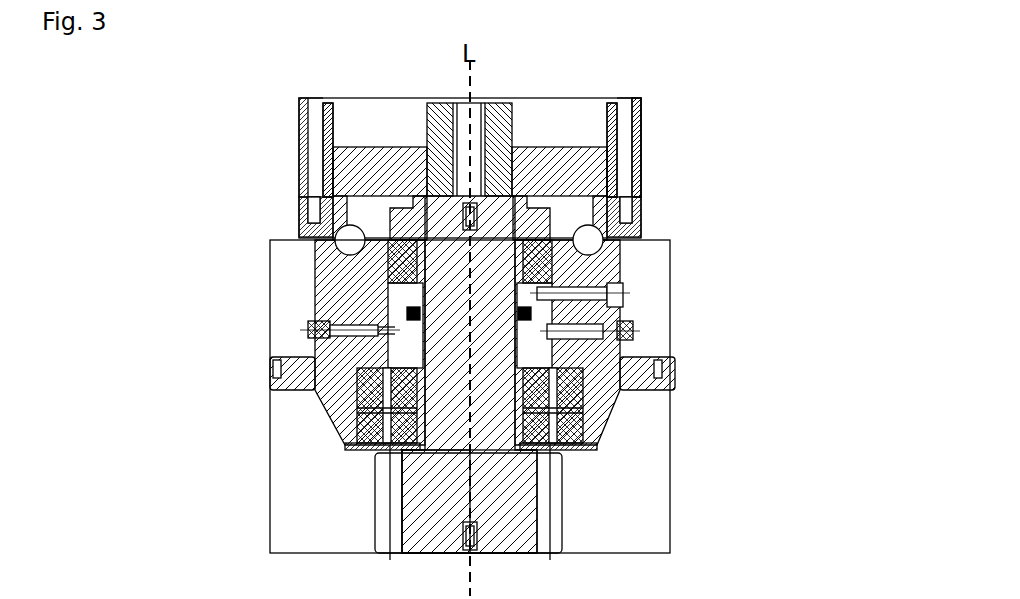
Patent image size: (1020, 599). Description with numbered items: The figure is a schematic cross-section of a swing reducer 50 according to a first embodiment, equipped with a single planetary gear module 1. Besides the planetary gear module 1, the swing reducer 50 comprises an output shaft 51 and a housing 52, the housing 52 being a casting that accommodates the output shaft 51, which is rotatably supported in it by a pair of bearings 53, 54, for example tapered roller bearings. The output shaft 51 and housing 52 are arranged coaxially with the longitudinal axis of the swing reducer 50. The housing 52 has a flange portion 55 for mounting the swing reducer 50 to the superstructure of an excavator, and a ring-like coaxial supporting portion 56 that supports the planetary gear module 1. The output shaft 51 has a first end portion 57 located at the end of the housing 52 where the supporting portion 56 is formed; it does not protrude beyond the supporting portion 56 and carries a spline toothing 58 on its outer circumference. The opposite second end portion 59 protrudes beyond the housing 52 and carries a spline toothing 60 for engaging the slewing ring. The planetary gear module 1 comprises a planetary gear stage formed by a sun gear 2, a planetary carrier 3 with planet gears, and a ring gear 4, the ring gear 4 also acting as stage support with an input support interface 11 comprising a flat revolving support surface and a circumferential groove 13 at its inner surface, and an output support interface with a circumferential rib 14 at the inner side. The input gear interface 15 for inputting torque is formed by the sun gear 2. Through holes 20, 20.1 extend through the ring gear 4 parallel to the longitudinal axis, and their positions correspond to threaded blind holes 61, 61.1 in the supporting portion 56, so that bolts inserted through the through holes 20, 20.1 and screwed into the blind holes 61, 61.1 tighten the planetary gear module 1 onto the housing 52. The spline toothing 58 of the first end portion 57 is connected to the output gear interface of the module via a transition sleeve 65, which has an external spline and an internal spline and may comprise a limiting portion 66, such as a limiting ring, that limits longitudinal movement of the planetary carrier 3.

The planetary gear module 1 is at (646, 101).
The sun gear 2 is at (498, 107).
The planetary carrier 3 is at (556, 125).
The ring gear 4 is at (632, 147).
The input support interface 11 is at (630, 85).
The groove 13 is at (327, 99).
The rib 14 is at (613, 196).
The input gear interface 15 is at (422, 90).
The through hole 20 is at (624, 127).
The through hole 20.1 is at (312, 122).
The swing reducer 50 is at (133, 316).
The output shaft 51 is at (515, 508).
The housing 52 is at (640, 265).
The bearing 53 is at (537, 263).
The bearing 54 is at (567, 423).
The flange portion 55 is at (645, 365).
The supporting portion 56 is at (307, 230).
The first end portion 57 is at (447, 220).
The spline toothing 58 is at (513, 217).
The second end portion 59 is at (437, 500).
The spline toothing 60 is at (383, 488).
The threaded blind hole 61 is at (627, 215).
The threaded blind hole 61.1 is at (310, 200).
The transition sleeve 65 is at (420, 206).
The limiting portion 66 is at (427, 206).